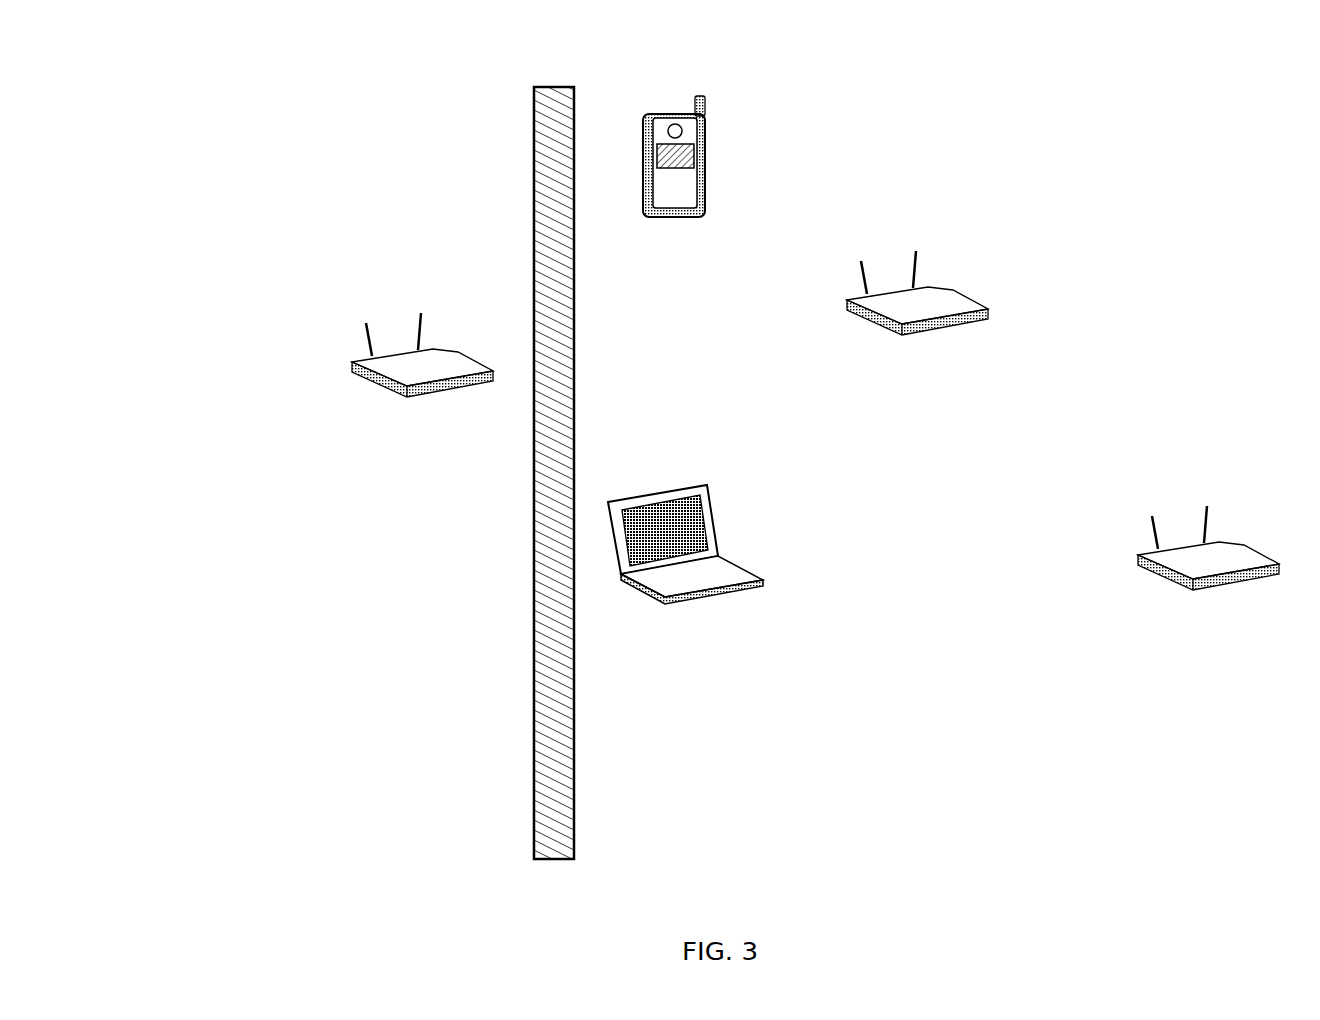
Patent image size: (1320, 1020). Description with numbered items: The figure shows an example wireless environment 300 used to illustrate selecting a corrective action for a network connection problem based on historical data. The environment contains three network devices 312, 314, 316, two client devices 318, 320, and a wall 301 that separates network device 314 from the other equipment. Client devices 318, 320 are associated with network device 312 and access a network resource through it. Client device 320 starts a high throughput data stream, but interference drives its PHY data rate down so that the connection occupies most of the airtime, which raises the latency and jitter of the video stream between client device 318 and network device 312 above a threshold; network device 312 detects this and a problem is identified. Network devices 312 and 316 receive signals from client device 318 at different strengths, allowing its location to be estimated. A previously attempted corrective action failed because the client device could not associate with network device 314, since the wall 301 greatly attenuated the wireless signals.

The wireless environment 300 is at (445, 120).
The wall 301 is at (535, 795).
The network device 312 is at (916, 320).
The network device 314 is at (421, 382).
The network device 316 is at (1208, 576).
The client device 318 is at (685, 571).
The client device 320 is at (676, 185).